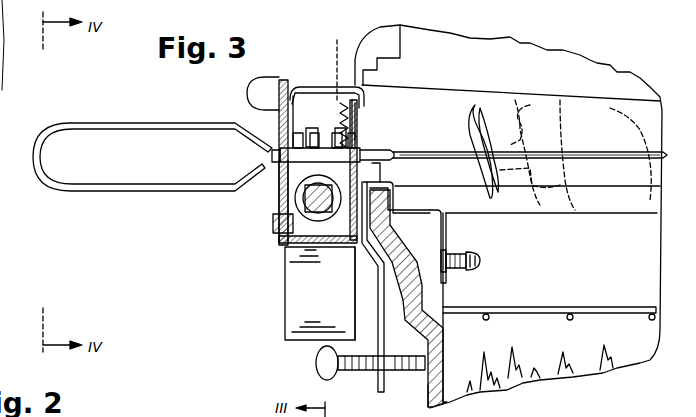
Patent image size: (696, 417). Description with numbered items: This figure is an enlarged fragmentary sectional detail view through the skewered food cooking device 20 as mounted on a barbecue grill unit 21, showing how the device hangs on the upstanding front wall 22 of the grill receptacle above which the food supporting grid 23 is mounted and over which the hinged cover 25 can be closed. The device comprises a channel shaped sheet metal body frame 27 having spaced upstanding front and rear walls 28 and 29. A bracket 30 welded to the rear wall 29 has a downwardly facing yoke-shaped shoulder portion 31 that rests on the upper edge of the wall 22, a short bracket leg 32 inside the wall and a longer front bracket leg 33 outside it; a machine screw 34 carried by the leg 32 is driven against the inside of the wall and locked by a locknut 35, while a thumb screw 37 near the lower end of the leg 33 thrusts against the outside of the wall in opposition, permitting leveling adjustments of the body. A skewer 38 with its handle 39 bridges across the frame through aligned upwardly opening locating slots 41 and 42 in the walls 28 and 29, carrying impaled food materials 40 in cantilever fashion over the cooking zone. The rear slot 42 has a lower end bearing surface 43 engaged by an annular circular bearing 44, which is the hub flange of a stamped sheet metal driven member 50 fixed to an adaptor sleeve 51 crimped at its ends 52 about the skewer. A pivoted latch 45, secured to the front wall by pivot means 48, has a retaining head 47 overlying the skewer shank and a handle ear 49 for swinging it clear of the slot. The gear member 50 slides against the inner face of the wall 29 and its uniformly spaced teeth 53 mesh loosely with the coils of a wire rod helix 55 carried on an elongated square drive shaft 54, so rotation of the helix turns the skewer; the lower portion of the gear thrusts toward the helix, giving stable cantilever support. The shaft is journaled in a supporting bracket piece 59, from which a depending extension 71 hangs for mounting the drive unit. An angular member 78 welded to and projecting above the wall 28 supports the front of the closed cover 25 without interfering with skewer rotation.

The skewered food cooking device 20 is at (236, 110).
The grill unit 21 is at (430, 397).
The front wall 22 is at (448, 343).
The food supporting grid 23 is at (552, 307).
The cover 25 is at (384, 31).
The body frame 27 is at (307, 248).
The front wall 28 is at (278, 202).
The rear wall 29 is at (385, 222).
The bracket 30 is at (363, 268).
The shoulder portion 31 is at (428, 188).
The bracket leg 32 is at (447, 236).
The front bracket leg 33 is at (380, 320).
The machine screw 34 is at (470, 263).
The locknut 35 is at (452, 270).
The thumb screw 37 is at (368, 372).
The skewer 38 is at (428, 149).
The handle 39 is at (140, 193).
The food materials 40 is at (573, 96).
The locating slot 41 is at (278, 132).
The locating slot 42 is at (356, 140).
The bearing surface 43 is at (364, 147).
The annular circular bearing 44 is at (360, 142).
The pivoted latch 45 is at (292, 105).
The retaining head 47 is at (295, 134).
The pivot means 48 is at (280, 238).
The handle ear 49 is at (268, 79).
The driven member 50 is at (353, 112).
The adaptor sleeve 51 is at (390, 181).
The sleeve ends 52 is at (312, 146).
The teeth 53 is at (348, 90).
The drive shaft 54 is at (321, 244).
The helix 55 is at (280, 176).
The supporting bracket piece 59 is at (324, 250).
The depending extension 71 is at (292, 323).
The angular member 78 is at (380, 80).